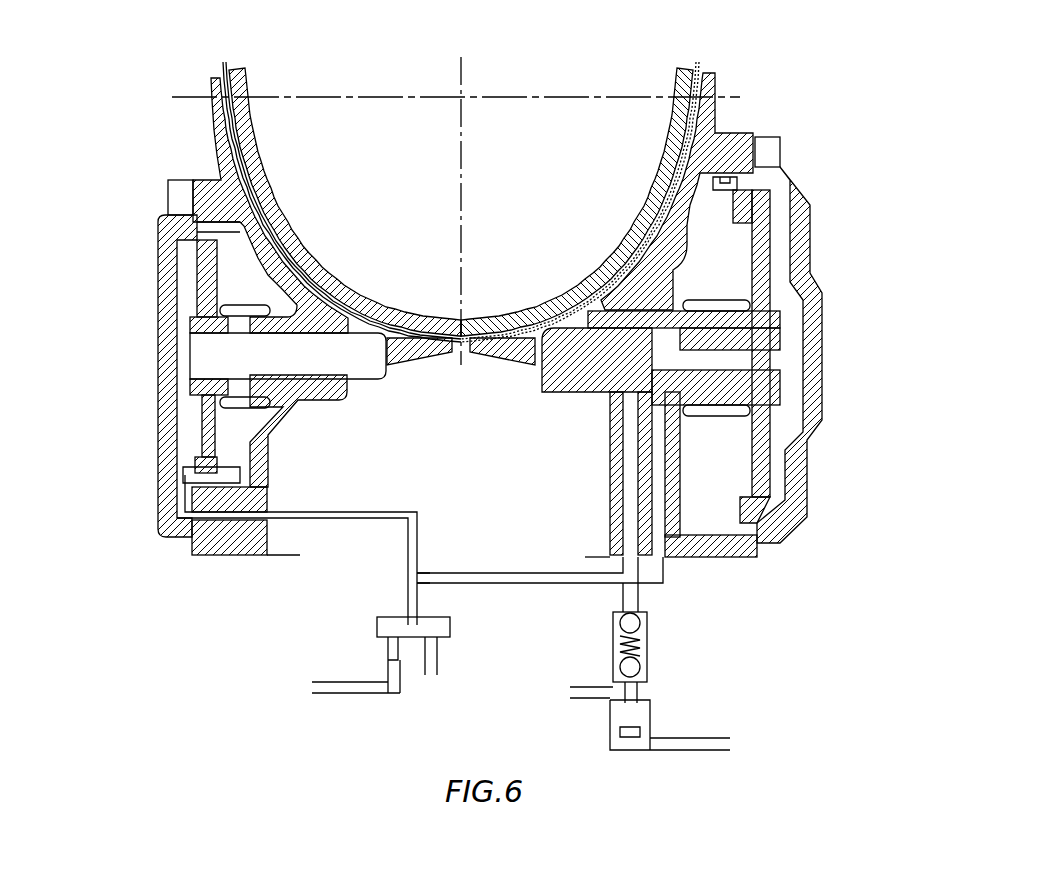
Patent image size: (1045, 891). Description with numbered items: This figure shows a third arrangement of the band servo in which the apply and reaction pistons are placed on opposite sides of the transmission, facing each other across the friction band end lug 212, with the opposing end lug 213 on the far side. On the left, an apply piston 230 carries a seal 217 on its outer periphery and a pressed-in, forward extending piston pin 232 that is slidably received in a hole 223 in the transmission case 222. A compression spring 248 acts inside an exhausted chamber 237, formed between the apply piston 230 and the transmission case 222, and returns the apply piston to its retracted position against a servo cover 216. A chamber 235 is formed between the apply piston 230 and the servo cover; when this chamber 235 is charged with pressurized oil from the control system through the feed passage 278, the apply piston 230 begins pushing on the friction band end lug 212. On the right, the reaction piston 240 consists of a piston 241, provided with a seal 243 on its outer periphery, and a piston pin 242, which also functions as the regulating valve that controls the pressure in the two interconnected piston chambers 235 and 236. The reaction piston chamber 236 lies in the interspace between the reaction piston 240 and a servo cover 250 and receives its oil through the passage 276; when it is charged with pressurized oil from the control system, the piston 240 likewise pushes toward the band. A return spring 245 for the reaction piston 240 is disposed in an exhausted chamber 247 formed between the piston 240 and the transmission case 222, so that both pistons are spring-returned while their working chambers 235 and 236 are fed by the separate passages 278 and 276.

The friction band end lug 212 is at (407, 327).
The right cone half 213 is at (517, 327).
The servo cover 216 is at (165, 307).
The seal 217 is at (177, 217).
The transmission case 222 is at (214, 92).
The hole 223 is at (327, 303).
The apply piston 230 is at (215, 420).
The piston pin 232 is at (352, 372).
The chamber 235 is at (187, 278).
The reaction piston chamber 236 is at (793, 382).
The exhausted chamber 237 is at (245, 263).
The reaction piston 240 is at (760, 227).
The piston 241 is at (783, 330).
The piston pin 242 is at (567, 383).
The seal 243 is at (745, 180).
The return spring 245 is at (727, 410).
The exhausted chamber 247 is at (707, 227).
The compression spring 248 is at (252, 305).
The servo cover 250 is at (800, 257).
The feed passage 276 is at (570, 580).
The feed passage 278 is at (373, 517).